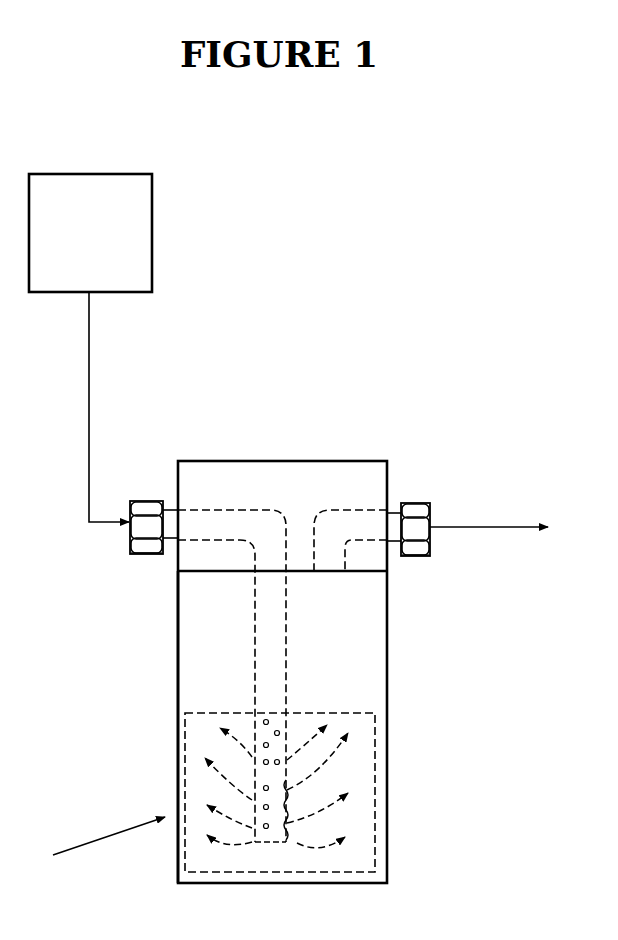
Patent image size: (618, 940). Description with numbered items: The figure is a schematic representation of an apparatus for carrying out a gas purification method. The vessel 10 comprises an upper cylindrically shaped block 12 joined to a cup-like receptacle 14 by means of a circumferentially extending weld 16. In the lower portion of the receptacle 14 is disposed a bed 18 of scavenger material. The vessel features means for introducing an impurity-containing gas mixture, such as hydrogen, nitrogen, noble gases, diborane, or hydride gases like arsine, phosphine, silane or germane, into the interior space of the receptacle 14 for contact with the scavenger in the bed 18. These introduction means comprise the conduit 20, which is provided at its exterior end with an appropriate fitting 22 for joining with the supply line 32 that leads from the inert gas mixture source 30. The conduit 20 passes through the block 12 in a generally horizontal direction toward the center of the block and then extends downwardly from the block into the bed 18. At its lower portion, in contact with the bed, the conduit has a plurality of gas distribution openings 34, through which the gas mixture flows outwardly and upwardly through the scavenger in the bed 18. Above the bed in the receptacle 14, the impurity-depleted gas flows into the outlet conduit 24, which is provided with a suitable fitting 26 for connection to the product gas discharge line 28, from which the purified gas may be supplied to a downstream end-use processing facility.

The vessel 10 is at (96, 844).
The upper cylindrically shaped block 12 is at (303, 436).
The cup-like receptacle 14 is at (190, 665).
The circumferentially extending weld 16 is at (178, 572).
The bed 18 is at (350, 806).
The conduit 20 is at (170, 510).
The fitting 22 is at (140, 554).
The outlet conduit 24 is at (395, 513).
The fitting 26 is at (422, 556).
The product gas discharge line 28 is at (485, 527).
The inert gas mixture source 30 is at (142, 227).
The supply line 32 is at (90, 378).
The gas distribution openings 34 is at (252, 800).